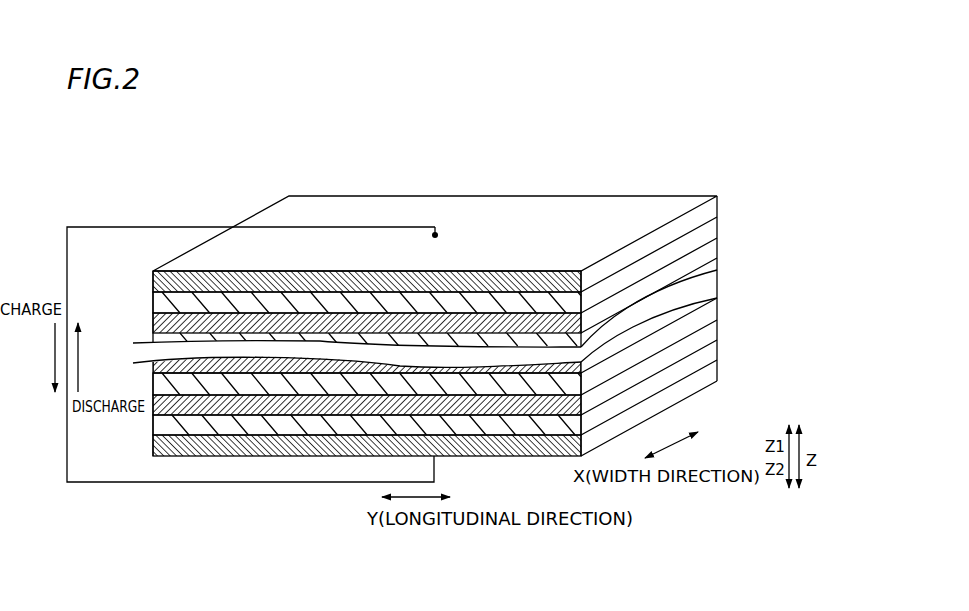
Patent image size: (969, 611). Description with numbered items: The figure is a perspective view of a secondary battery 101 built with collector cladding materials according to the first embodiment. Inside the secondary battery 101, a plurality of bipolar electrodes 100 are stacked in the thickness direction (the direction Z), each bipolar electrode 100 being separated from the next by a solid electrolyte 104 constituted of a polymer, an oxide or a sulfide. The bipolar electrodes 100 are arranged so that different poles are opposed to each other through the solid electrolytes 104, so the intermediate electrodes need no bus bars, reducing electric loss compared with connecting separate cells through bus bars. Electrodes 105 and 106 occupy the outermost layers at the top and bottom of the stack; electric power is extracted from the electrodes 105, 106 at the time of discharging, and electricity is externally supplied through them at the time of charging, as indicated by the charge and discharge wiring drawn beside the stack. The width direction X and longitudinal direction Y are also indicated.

The secondary battery 101 is at (469, 294).
The electrode 105 is at (718, 206).
The solid electrolyte 104 is at (718, 227).
The bipolar electrode 100 is at (718, 248).
The electrode 106 is at (718, 370).